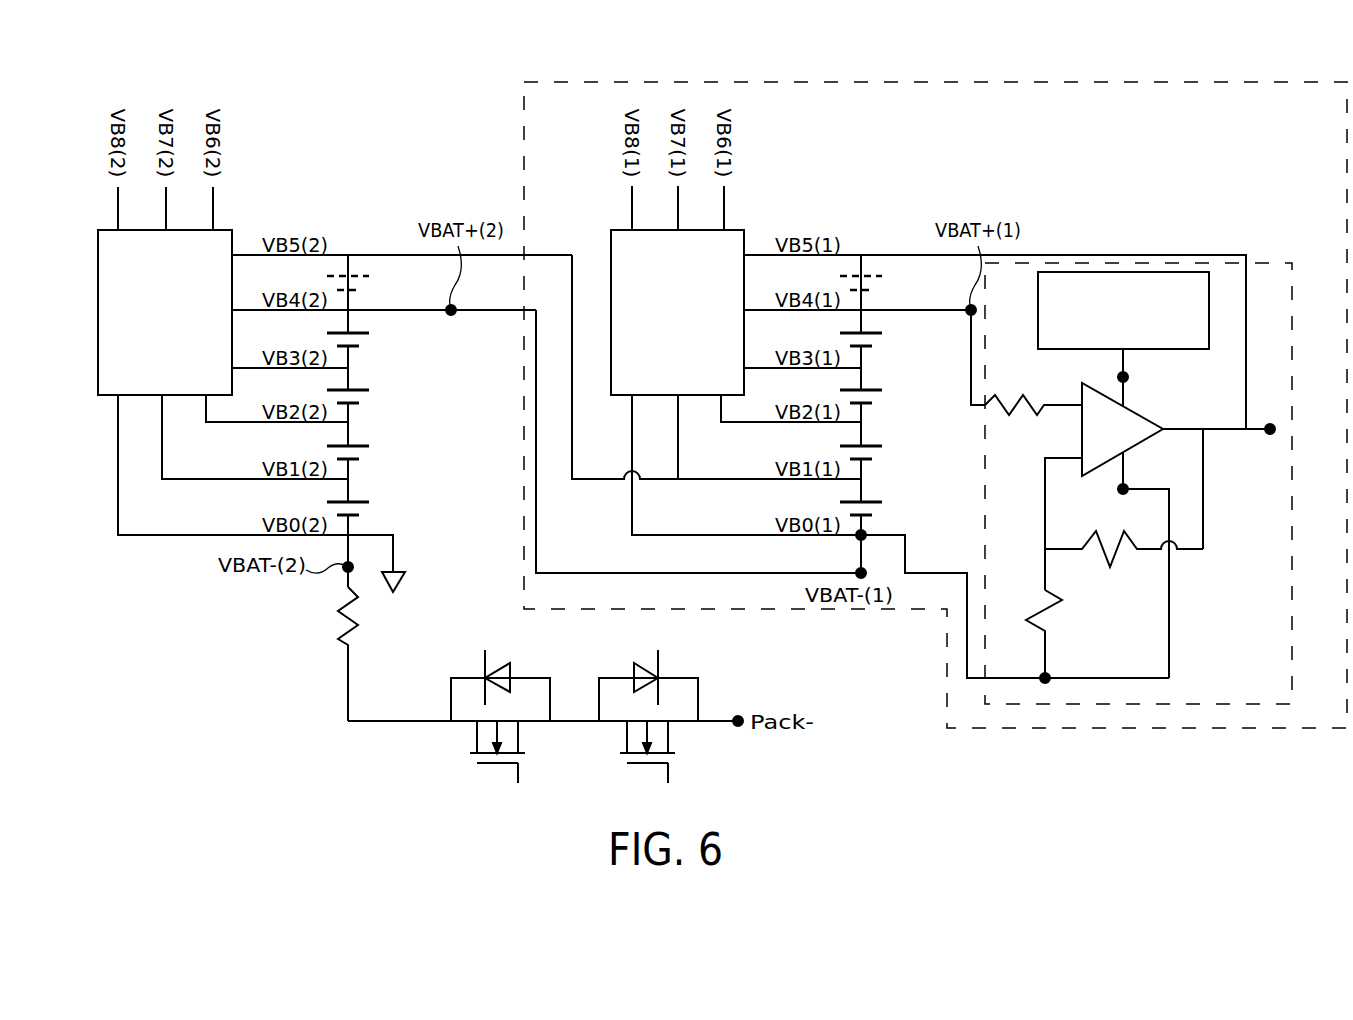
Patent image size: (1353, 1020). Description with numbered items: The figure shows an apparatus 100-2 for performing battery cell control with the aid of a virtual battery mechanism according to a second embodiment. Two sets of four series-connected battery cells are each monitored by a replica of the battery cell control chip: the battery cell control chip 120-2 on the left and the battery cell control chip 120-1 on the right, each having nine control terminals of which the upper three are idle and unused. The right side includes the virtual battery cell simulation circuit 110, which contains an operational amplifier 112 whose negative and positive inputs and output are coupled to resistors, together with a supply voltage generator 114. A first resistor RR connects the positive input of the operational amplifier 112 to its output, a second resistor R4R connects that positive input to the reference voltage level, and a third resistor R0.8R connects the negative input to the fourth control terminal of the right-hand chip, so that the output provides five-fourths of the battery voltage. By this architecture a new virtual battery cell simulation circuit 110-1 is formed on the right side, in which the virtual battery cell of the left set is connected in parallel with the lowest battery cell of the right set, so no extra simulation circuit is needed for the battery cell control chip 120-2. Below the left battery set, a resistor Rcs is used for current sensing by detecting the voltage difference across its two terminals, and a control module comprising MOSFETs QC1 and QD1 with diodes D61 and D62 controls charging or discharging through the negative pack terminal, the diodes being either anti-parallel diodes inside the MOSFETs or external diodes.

The apparatus 100-2 is at (272, 78).
The battery cell control chip 120-2 is at (98, 262).
The battery cell control chip 120-1 is at (611, 262).
The virtual battery cell simulation circuit 110-1 is at (1275, 82).
The virtual battery cell simulation circuit 110 is at (1278, 263).
The supply voltage generator 114 is at (1130, 272).
The operational amplifier 112 is at (1140, 410).
The resistor Rcs is at (370, 654).
The diode D61 is at (500, 672).
The diode D62 is at (648, 672).
The MOSFET QC1 is at (497, 767).
The MOSFET QD1 is at (647, 767).
The third resistor R0.8R is at (1033, 389).
The first resistor RR is at (1124, 545).
The second resistor R4R is at (1063, 634).